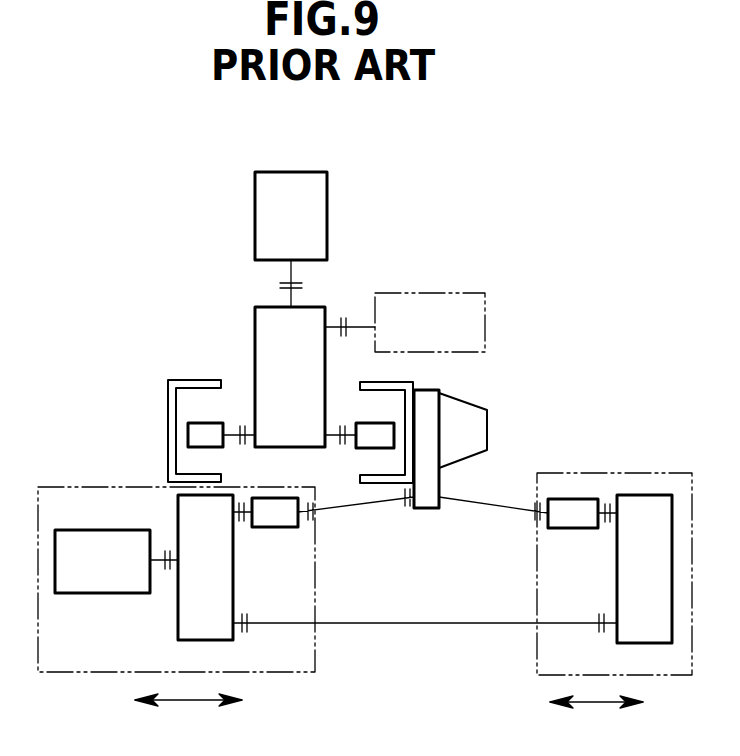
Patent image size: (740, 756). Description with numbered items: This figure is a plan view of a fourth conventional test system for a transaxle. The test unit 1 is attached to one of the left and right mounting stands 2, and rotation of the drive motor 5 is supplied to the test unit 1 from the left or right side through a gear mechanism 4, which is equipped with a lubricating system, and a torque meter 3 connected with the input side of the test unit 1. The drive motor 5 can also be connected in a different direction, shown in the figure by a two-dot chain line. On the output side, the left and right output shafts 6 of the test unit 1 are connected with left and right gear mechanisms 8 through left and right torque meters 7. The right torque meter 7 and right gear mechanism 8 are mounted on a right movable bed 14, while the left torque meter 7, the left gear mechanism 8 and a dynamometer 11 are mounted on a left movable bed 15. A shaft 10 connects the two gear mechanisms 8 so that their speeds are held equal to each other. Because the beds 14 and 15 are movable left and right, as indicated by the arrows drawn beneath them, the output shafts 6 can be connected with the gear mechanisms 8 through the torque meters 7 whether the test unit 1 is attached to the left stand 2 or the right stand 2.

The test unit 1 is at (487, 405).
The mounting stand 2 is at (190, 380).
The torque meter 3 is at (215, 447).
The gear mechanism 4 is at (255, 322).
The drive motor 5 is at (327, 218).
The output shaft 6 is at (375, 505).
The torque meter 7 is at (275, 527).
The gear mechanism 8 is at (178, 618).
The shaft 10 is at (415, 624).
The dynamometer 11 is at (83, 593).
The right movable bed 14 is at (603, 472).
The left movable bed 15 is at (90, 487).